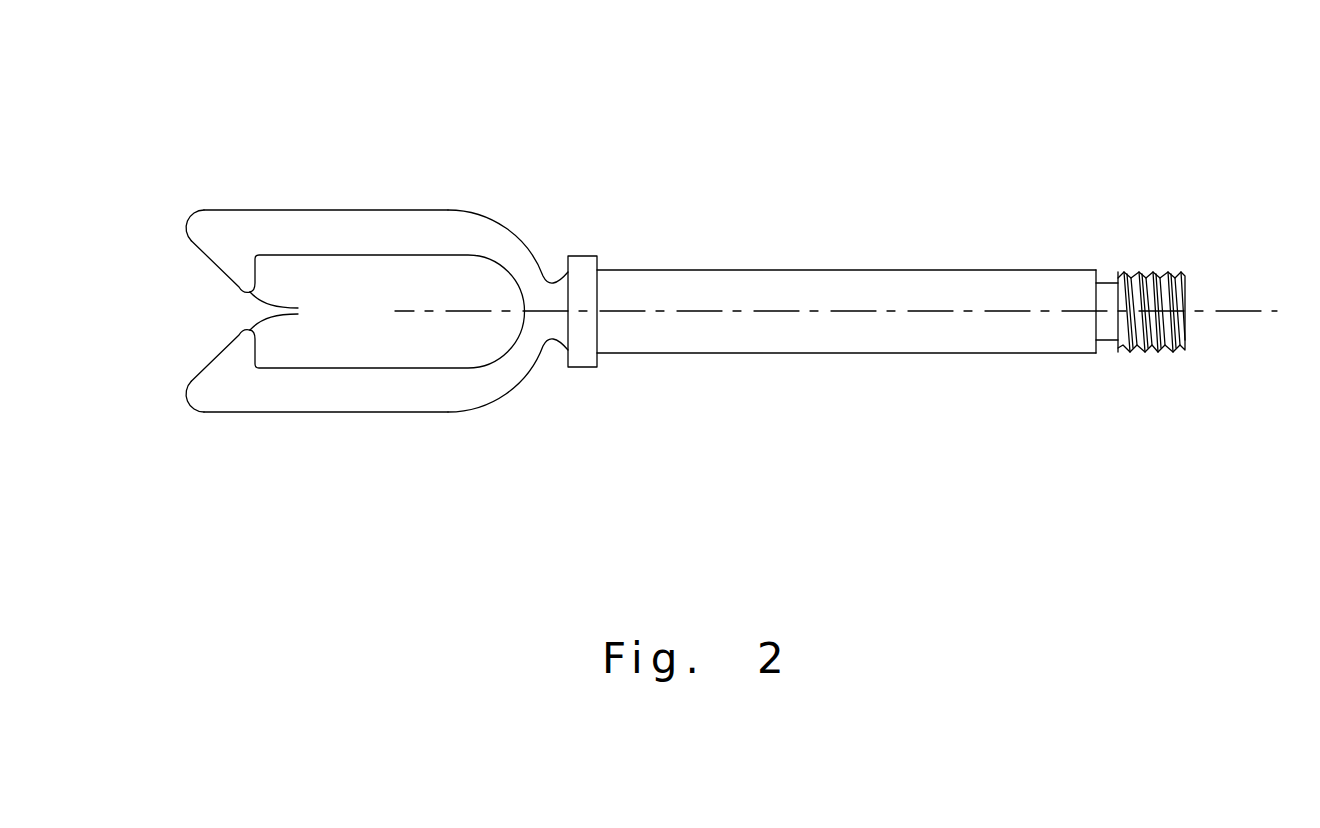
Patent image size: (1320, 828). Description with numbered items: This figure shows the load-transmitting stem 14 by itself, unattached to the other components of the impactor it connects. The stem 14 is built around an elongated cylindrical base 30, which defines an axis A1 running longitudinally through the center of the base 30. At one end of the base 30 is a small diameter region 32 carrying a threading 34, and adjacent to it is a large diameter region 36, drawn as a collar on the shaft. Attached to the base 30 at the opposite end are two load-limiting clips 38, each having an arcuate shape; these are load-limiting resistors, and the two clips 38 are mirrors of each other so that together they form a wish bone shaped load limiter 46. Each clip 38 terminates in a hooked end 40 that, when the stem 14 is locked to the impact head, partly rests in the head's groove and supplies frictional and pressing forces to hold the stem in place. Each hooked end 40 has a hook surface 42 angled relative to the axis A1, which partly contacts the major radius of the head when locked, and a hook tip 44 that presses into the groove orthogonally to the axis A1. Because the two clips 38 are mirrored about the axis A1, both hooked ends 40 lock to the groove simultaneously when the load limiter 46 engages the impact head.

The load-transmitting stem 14 is at (624, 162).
The elongated cylindrical base 30 is at (847, 271).
The small diameter region 32 is at (1107, 342).
The threading 34 is at (1138, 272).
The large diameter region 36 is at (582, 367).
The load-limiting clip 38 is at (377, 210).
The hooked end 40 is at (200, 210).
The hook surface 42 is at (205, 257).
The hook tip 44 is at (387, 311).
The wish bone shaped load limiter 46 is at (491, 416).
The axis A1 is at (1238, 313).